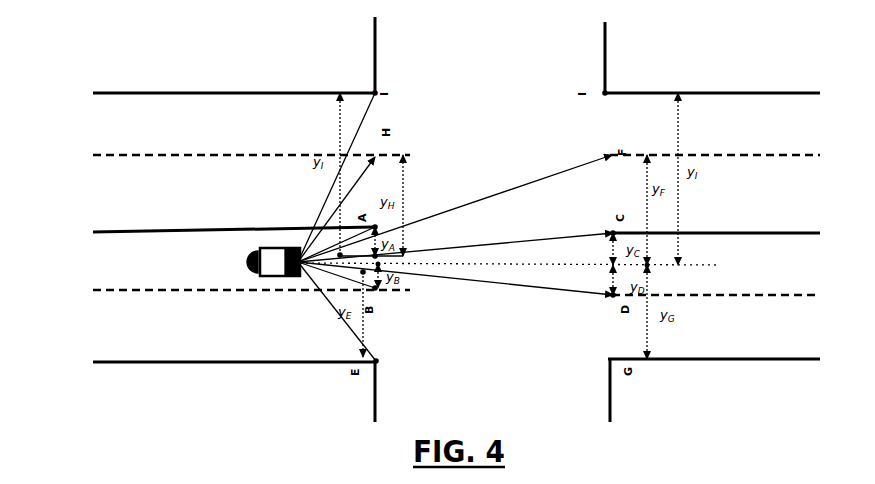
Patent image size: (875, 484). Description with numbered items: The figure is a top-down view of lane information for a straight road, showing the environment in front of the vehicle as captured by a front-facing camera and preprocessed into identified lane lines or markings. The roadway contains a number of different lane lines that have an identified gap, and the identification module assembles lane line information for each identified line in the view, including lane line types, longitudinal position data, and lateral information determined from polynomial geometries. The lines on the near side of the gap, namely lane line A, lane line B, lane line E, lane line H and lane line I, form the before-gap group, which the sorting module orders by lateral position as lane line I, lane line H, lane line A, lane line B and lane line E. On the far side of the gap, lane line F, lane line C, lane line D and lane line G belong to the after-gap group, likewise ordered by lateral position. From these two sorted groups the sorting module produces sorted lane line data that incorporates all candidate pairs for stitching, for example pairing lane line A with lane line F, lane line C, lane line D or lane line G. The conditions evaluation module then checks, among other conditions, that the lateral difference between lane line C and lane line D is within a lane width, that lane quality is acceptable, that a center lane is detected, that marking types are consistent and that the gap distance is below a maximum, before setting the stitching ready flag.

The lane line I is at (456, 55).
The lane line H is at (251, 145).
The lane line A is at (233, 222).
The lane line B is at (251, 280).
The lane line E is at (233, 382).
The lane line F is at (716, 145).
The lane line C is at (717, 223).
The lane line D is at (718, 285).
The lane line G is at (716, 381).